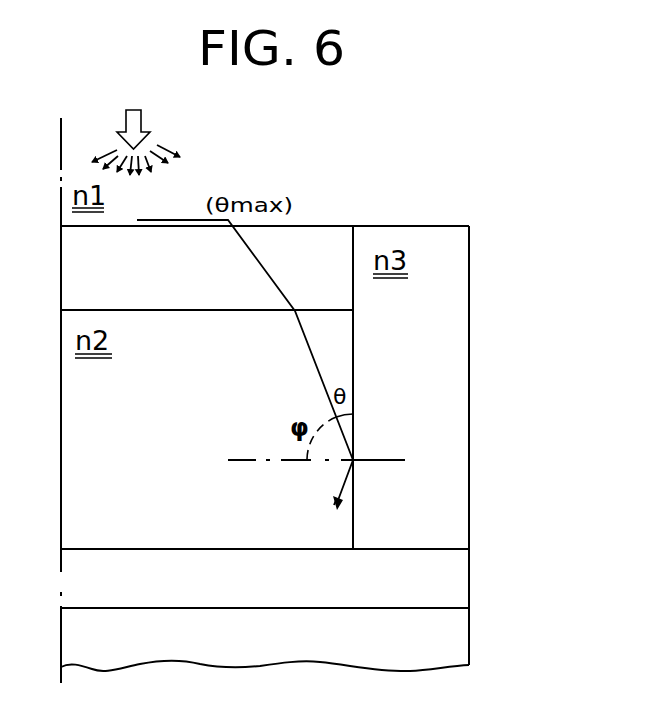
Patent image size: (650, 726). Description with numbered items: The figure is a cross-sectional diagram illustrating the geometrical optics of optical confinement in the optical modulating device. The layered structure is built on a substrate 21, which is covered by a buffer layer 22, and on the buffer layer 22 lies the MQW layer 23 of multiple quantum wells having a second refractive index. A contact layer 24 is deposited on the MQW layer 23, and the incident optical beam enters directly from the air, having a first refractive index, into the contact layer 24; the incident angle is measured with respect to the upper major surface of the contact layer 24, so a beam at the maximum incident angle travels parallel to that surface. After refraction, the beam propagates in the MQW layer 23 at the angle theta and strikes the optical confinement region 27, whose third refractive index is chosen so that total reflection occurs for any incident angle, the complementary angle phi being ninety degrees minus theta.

The substrate 21 is at (455, 632).
The buffer layer 22 is at (455, 580).
The MQW layer 23 is at (342, 527).
The contact layer 24 is at (327, 242).
The optical confinement region 27 is at (453, 259).